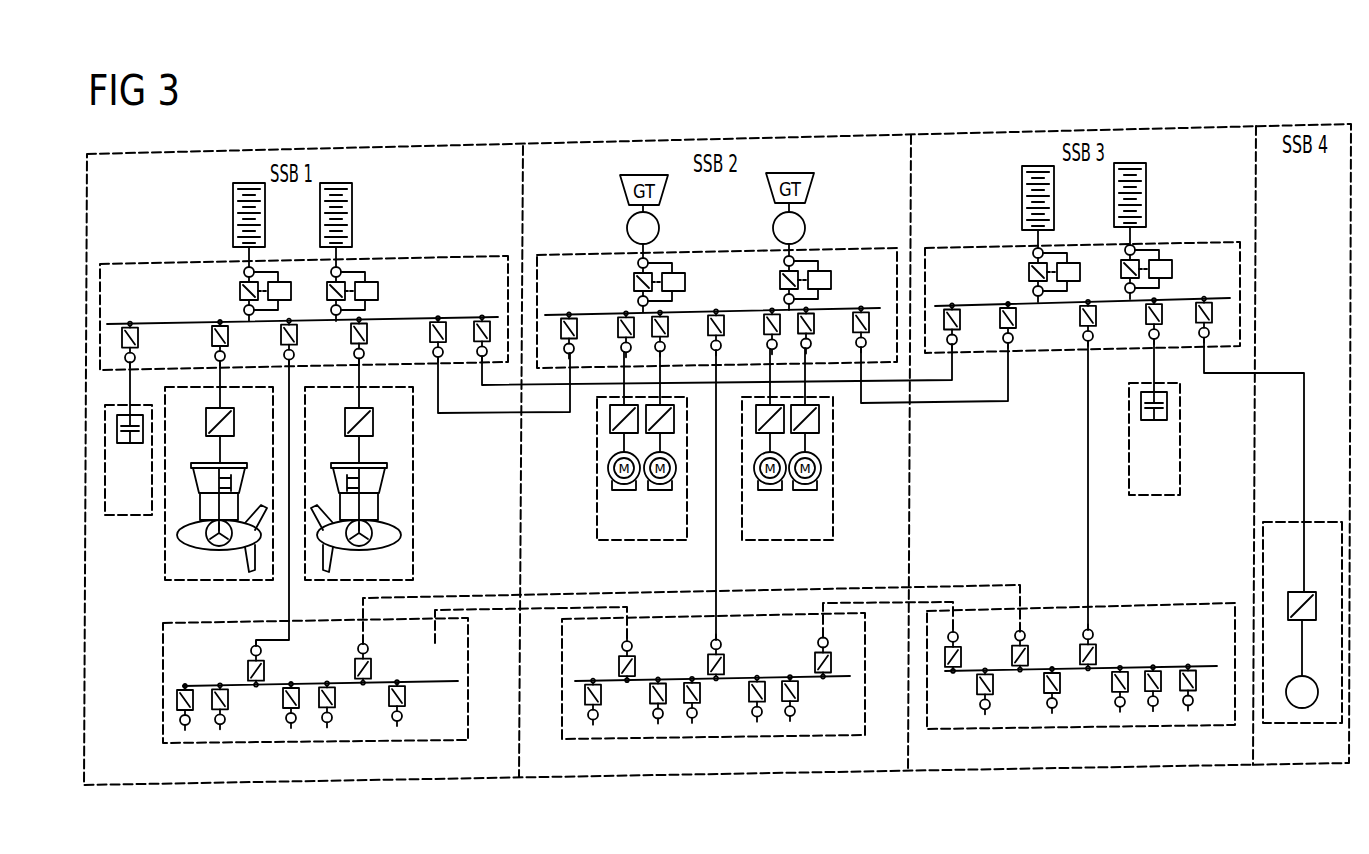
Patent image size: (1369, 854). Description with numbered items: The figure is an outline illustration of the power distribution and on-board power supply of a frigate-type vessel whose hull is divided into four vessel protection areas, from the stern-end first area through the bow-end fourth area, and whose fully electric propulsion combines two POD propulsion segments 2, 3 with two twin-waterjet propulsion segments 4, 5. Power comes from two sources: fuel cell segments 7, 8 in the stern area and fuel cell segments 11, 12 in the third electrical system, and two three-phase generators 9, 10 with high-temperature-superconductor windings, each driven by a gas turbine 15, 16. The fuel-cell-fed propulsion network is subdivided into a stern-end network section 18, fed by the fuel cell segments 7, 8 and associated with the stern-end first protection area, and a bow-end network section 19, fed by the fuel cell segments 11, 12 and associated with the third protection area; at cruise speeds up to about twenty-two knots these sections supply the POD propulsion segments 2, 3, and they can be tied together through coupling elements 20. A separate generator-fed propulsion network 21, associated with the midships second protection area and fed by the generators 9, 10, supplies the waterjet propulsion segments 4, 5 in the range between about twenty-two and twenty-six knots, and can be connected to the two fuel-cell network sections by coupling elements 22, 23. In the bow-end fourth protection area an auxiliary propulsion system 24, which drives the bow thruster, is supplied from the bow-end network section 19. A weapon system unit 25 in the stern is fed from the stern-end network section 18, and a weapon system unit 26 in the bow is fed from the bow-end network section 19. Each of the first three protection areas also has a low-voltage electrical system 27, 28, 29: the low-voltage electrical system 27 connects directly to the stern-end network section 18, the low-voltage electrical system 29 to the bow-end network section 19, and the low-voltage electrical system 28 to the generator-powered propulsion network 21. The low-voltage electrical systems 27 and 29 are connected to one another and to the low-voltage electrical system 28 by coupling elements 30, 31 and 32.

The POD propulsion segment 2 is at (200, 535).
The POD propulsion segment 3 is at (375, 530).
The waterjet propulsion segment 4 is at (622, 490).
The waterjet propulsion segment 5 is at (806, 490).
The fuel cell segment 7 is at (240, 190).
The fuel cell segment 8 is at (352, 190).
The generator 9 is at (628, 228).
The generator 10 is at (775, 228).
The fuel cell segment 11 is at (1025, 170).
The fuel cell segment 12 is at (1147, 170).
The gas turbine 15 is at (624, 182).
The gas turbine 16 is at (812, 181).
The stern-end network section 18 is at (130, 270).
The bow-end network section 19 is at (1212, 245).
The coupling element 20 is at (945, 383).
The generator-fed propulsion network 21 is at (868, 253).
The coupling element 22 is at (483, 413).
The coupling element 23 is at (992, 405).
The auxiliary propulsion system 24 is at (1322, 522).
The weapon system unit 25 is at (117, 510).
The weapon system unit 26 is at (1160, 495).
The low-voltage electrical system 27 is at (286, 680).
The low-voltage electrical system 28 is at (713, 641).
The low-voltage electrical system 29 is at (1192, 605).
The coupling element 30 is at (358, 638).
The coupling element 31 is at (628, 627).
The coupling element 32 is at (892, 604).